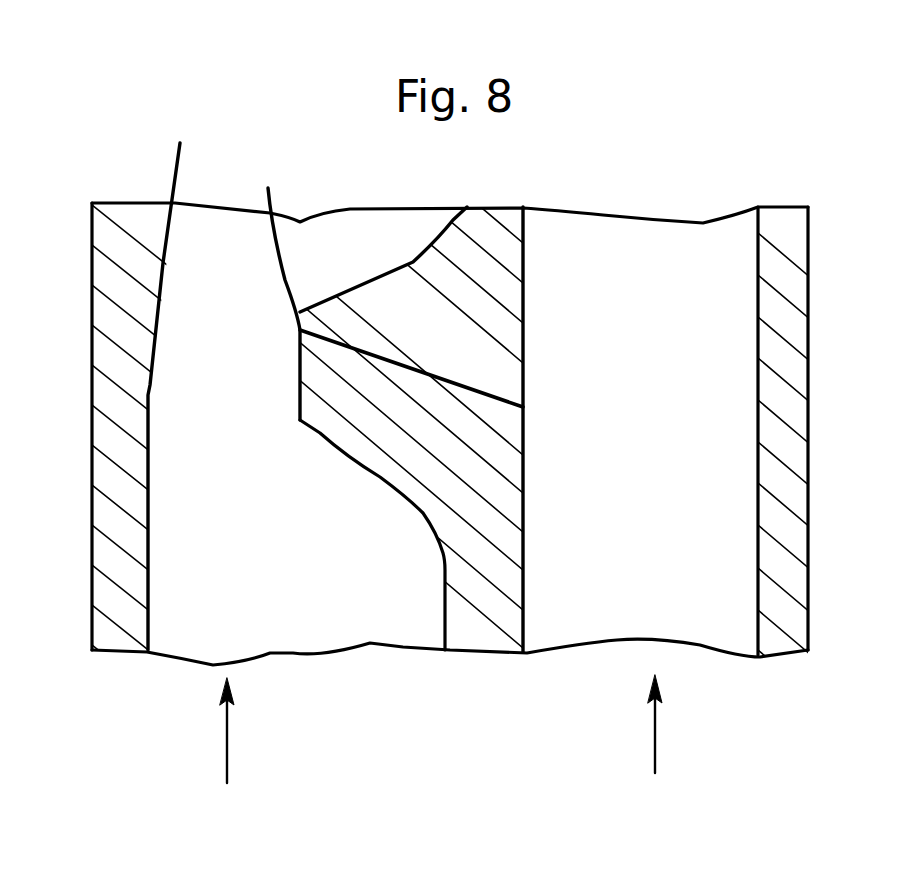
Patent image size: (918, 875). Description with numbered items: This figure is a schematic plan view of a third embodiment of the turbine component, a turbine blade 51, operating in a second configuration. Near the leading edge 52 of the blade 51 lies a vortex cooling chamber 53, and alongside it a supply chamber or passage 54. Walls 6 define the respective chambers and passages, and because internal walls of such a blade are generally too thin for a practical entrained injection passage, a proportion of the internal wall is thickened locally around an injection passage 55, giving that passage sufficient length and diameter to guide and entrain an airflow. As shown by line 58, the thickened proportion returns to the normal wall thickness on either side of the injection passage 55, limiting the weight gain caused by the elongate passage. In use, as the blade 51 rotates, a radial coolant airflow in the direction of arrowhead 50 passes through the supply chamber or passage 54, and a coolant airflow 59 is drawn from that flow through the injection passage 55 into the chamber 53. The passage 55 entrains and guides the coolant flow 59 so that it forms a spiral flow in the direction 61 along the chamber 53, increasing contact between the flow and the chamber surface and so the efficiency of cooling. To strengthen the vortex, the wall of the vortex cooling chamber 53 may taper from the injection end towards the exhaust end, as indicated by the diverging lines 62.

The coolant airflow direction 50 is at (657, 747).
The turbine blade 51 is at (650, 178).
The leading edge 52 is at (93, 360).
The vortex cooling chamber 53 is at (210, 257).
The supply chamber or passage 54 is at (658, 284).
The injection passage 55 is at (347, 373).
The line 58 is at (352, 288).
The coolant airflow 59 is at (290, 352).
The walls 6 is at (490, 577).
The spiral flow direction 61 is at (227, 754).
The diverging lines 62 is at (272, 246).